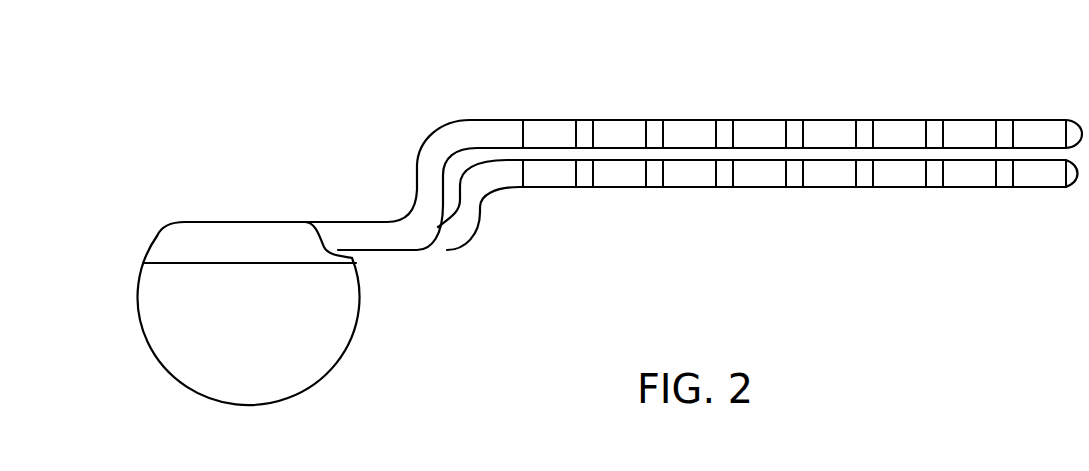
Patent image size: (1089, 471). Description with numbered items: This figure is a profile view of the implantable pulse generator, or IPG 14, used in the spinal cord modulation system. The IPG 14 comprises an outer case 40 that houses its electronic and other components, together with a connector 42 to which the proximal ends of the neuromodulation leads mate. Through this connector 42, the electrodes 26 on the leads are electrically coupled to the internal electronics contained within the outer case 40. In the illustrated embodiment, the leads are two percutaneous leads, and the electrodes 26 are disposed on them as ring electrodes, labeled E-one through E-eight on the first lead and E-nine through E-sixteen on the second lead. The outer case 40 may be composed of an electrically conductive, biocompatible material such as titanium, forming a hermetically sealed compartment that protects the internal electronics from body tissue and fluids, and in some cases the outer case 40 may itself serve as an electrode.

The implantable pulse generator 14 is at (184, 185).
The electrodes 26 is at (760, 120).
The outer case 40 is at (358, 318).
The connector 42 is at (257, 226).